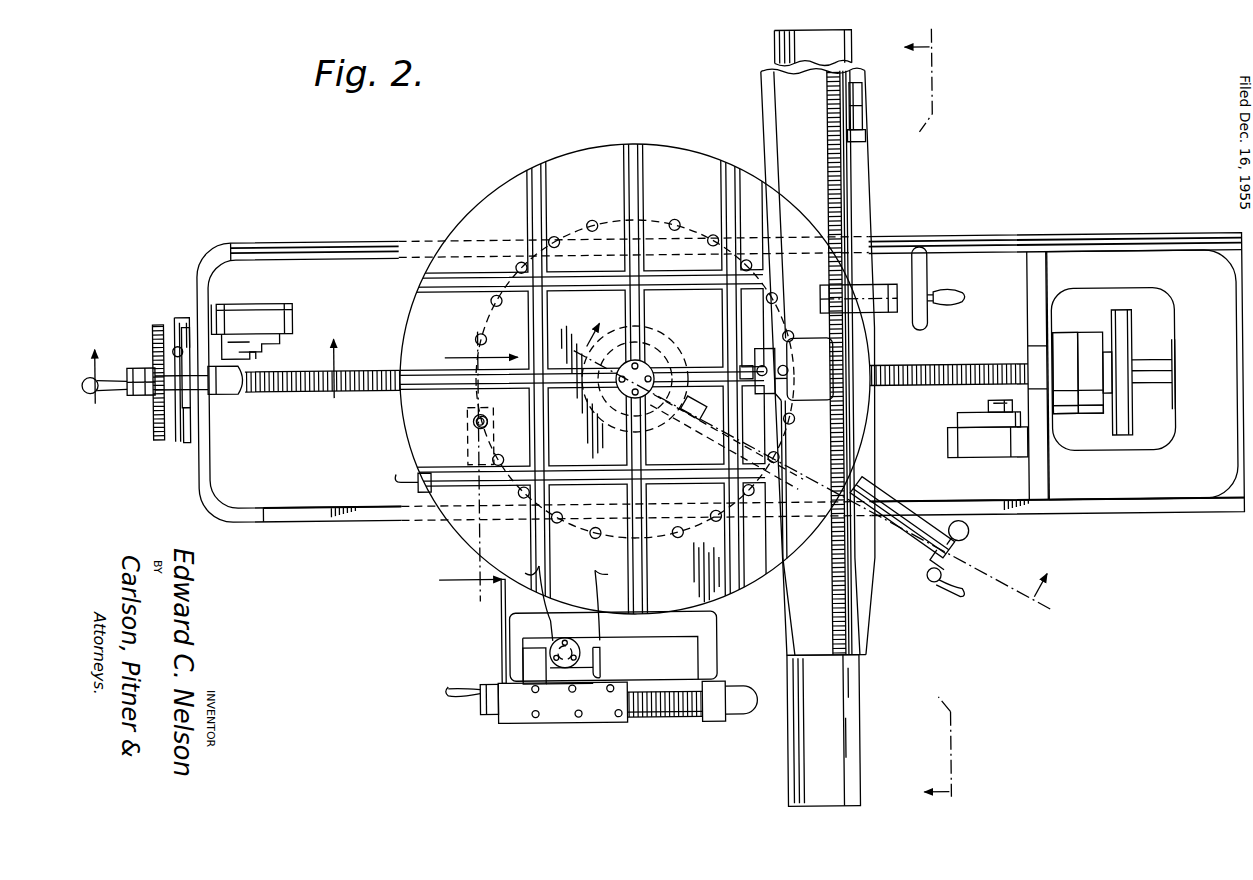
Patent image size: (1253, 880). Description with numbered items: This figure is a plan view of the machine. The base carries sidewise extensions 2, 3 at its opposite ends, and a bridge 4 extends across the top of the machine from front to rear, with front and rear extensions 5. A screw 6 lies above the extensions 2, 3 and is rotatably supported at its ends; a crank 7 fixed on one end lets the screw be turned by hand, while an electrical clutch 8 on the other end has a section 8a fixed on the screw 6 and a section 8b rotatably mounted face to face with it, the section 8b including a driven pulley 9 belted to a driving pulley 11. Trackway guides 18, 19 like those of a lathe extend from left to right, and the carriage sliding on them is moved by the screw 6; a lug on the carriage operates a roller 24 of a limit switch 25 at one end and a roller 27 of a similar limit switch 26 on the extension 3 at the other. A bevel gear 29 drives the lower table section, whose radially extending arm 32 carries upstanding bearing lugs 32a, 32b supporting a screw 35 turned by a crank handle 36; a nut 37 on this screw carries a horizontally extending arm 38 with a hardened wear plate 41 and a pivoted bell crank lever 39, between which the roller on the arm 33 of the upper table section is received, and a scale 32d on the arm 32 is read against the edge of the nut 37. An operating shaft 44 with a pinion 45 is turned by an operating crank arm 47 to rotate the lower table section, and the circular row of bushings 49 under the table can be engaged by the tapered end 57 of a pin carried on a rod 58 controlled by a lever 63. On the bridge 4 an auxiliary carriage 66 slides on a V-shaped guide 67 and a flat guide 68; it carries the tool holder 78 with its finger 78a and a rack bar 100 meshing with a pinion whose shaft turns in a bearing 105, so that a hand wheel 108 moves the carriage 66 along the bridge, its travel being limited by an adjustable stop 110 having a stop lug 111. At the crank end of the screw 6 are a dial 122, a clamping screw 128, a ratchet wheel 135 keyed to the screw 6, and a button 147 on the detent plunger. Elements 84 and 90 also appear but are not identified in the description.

The sidewise extension 2 is at (301, 518).
The sidewise extension 3 is at (1200, 530).
The bridge 4 is at (472, 470).
The front and rear extensions 5 is at (778, 54).
The screw 6 is at (380, 388).
The crank 7 is at (103, 392).
The electrical clutch 8 is at (1090, 330).
The clutch section 8a is at (1064, 336).
The clutch section 8b is at (1093, 420).
The driven pulley 9 is at (1137, 333).
The driving pulley 11 is at (216, 361).
The trackway guide 18 is at (395, 240).
The trackway guide 19 is at (386, 518).
The roller 24 is at (262, 352).
The limit switch 25 is at (254, 312).
The limit switch 26 is at (994, 457).
The roller 27 is at (986, 408).
The bevel gear 29 is at (676, 331).
The radially extending arm 32 is at (506, 626).
The bearing lug 32a is at (712, 722).
The bearing lug 32b is at (500, 722).
The scale 32d is at (660, 722).
The arm 33 is at (572, 614).
The screw 35 is at (693, 692).
The crank handle 36 is at (445, 688).
The nut 37 is at (603, 722).
The arm 38 is at (520, 668).
The bell crank lever 39 is at (598, 655).
The wear plate 41 is at (520, 651).
The operating shaft 44 is at (900, 503).
The pinion 45 is at (692, 424).
The operating crank arm 47 is at (968, 540).
The bushing 49 is at (680, 220).
The tapered upper end 57 is at (472, 419).
The rod 58 is at (478, 430).
The lever 63 is at (395, 472).
The auxiliary carriage 66 is at (806, 342).
The guide 67 is at (760, 72).
The guide 68 is at (842, 55).
The tool holder 78 is at (752, 362).
The finger 78a is at (746, 366).
The clamp body 84 is at (807, 497).
The clamp jaw 90 is at (770, 395).
The rack bar 100 is at (830, 162).
The bearing 105 is at (883, 285).
The hand wheel 108 is at (932, 271).
The adjustable stop 110 is at (866, 104).
The stop lug 111 is at (868, 140).
The dial 122 is at (186, 438).
The screw 128 is at (176, 312).
The ratchet wheel 135 is at (156, 320).
The button 147 is at (145, 362).